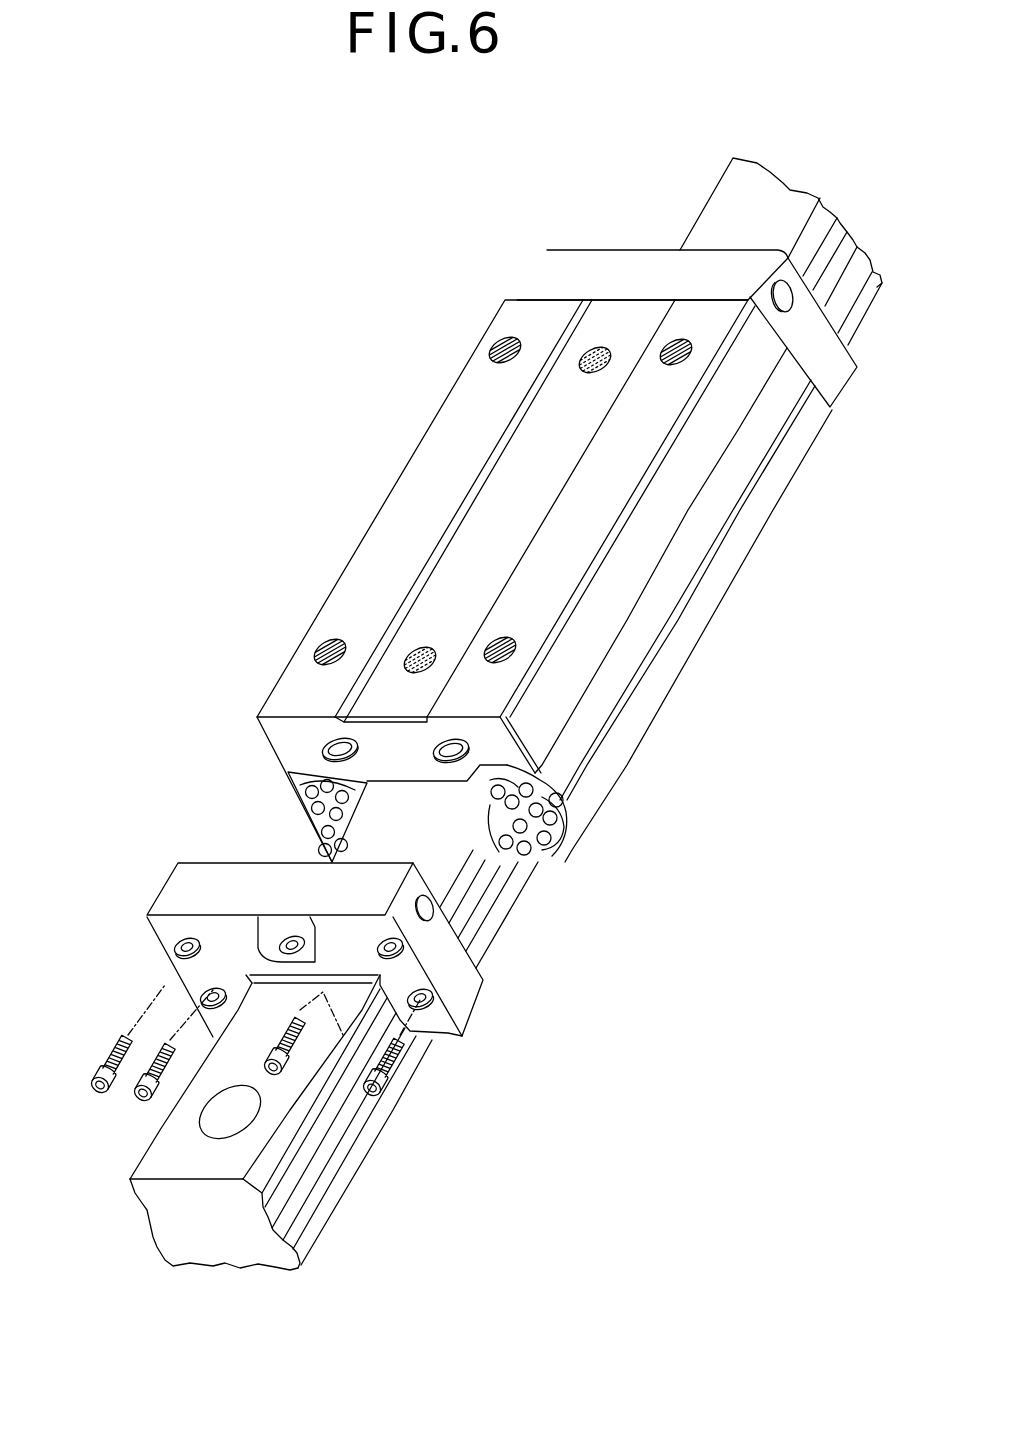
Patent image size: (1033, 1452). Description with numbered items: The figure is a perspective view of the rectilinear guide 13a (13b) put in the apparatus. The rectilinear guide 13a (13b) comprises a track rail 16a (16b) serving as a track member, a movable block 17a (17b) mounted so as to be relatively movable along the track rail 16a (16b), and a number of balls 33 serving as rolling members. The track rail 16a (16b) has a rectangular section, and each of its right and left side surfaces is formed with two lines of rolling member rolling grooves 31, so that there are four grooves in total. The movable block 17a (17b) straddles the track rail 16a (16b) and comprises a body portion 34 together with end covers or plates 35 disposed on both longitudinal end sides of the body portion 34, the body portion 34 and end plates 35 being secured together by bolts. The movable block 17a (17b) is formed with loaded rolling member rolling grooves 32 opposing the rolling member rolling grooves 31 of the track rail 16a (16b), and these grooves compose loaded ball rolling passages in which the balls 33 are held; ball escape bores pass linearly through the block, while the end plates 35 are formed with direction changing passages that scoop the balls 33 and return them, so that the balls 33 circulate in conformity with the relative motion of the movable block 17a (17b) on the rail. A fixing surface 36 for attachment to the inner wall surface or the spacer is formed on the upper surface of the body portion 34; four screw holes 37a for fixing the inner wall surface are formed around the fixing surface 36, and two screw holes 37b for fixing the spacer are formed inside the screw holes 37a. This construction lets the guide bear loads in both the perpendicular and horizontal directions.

The rectilinear guide 13a is at (426, 313).
The rectilinear guide 13b is at (516, 615).
The track rail 16a is at (230, 1240).
The track rail 16b is at (463, 745).
The movable block 17a is at (443, 473).
The movable block 17b is at (544, 581).
The rolling member rolling grooves 31 is at (87, 1197).
The loaded rolling member rolling grooves 32 is at (545, 800).
The balls 33 is at (300, 790).
The body portion 34 is at (770, 505).
The end covers (plates) 35 is at (820, 400).
The fixing surface 36 is at (385, 540).
The screw holes 37a is at (676, 340).
The screw holes 37b is at (596, 345).